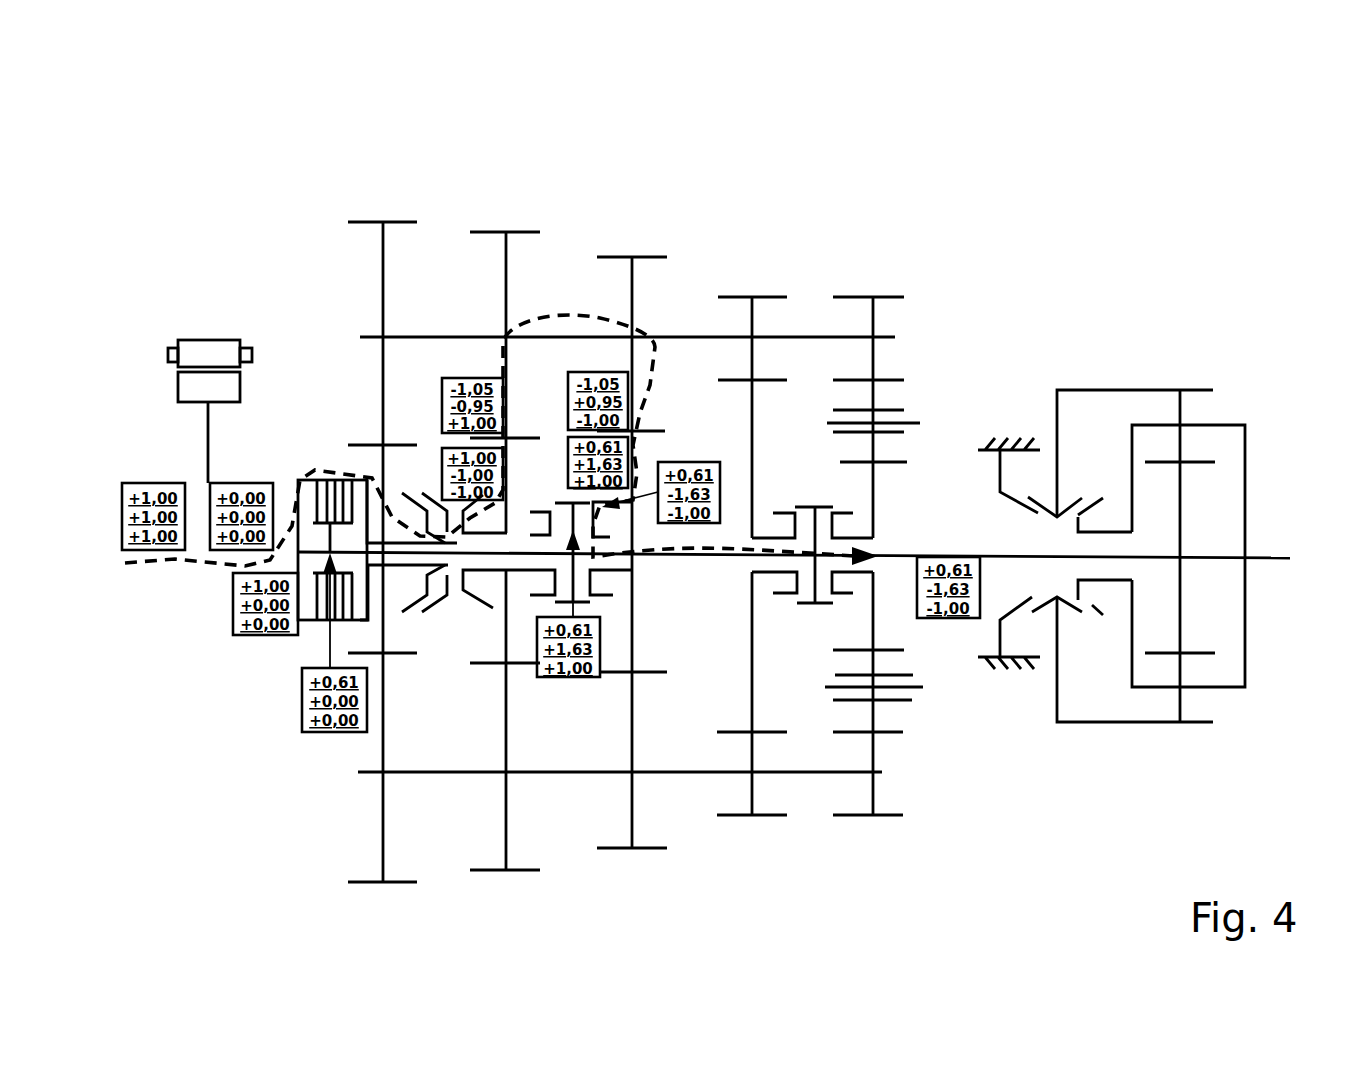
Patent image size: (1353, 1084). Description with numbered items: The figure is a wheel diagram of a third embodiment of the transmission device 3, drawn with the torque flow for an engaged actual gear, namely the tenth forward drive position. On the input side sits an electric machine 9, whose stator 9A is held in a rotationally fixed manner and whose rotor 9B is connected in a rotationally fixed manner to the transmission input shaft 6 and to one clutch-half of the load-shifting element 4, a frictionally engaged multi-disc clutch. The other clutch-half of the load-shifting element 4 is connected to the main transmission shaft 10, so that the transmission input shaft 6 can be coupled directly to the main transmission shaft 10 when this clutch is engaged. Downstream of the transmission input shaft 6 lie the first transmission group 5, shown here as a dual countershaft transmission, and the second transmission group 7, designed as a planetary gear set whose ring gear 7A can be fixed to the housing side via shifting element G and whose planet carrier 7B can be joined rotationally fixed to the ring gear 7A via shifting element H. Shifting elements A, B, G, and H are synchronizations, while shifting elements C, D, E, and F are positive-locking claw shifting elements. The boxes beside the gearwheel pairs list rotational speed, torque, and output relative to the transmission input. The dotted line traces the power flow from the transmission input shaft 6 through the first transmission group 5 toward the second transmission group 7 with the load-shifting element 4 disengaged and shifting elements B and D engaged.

The transmission device 3 is at (278, 210).
The load-shifting element 4 is at (303, 462).
The first transmission group 5 is at (635, 499).
The transmission input shaft 6 is at (385, 538).
The second transmission group 7 is at (1121, 563).
The ring gear 7A is at (1172, 390).
The planet carrier 7B is at (1220, 425).
The electric machine 9 is at (164, 339).
The stator 9A is at (190, 355).
The rotor 9B is at (190, 390).
The main transmission shaft 10 is at (690, 558).
The shifting element A is at (403, 603).
The shifting element B is at (487, 604).
The shifting element C is at (532, 603).
The shifting element D is at (606, 603).
The shifting element E is at (786, 595).
The shifting element F is at (840, 596).
The shifting element G is at (1010, 615).
The shifting element H is at (1092, 605).